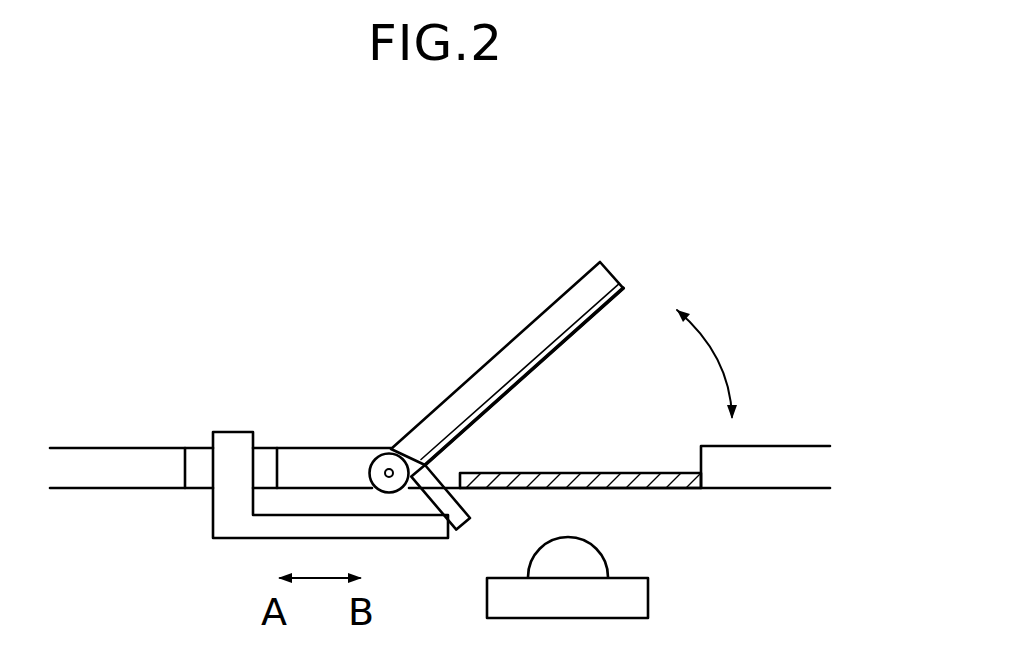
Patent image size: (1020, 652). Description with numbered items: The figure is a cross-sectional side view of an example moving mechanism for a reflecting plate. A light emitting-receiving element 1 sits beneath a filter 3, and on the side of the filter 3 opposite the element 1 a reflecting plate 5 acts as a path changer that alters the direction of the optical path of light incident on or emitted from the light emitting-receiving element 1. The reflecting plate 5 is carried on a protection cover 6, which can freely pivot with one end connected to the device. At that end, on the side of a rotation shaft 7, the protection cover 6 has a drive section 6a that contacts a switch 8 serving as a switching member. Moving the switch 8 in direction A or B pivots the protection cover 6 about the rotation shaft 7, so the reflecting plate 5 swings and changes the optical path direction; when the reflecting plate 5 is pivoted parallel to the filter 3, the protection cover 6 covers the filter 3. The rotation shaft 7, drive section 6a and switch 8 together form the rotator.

The light emitting-receiving element 1 is at (597, 559).
The filter 3 is at (687, 490).
The reflecting plate 5 is at (624, 306).
The protection cover 6 is at (582, 283).
The drive section 6a is at (469, 516).
The rotation shaft 7 is at (388, 472).
The switch 8 is at (227, 523).